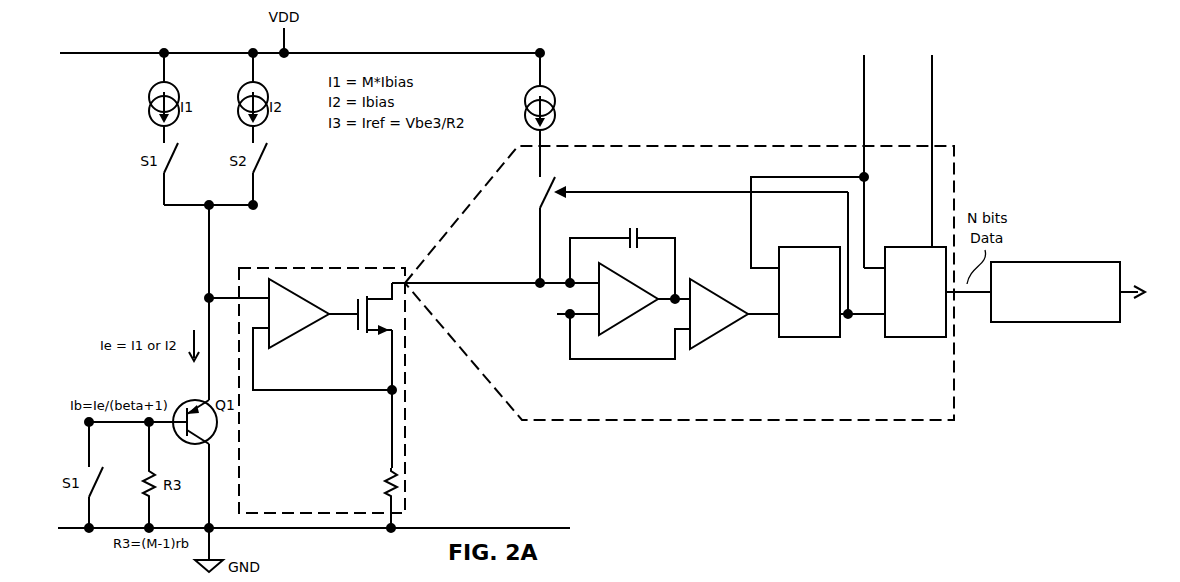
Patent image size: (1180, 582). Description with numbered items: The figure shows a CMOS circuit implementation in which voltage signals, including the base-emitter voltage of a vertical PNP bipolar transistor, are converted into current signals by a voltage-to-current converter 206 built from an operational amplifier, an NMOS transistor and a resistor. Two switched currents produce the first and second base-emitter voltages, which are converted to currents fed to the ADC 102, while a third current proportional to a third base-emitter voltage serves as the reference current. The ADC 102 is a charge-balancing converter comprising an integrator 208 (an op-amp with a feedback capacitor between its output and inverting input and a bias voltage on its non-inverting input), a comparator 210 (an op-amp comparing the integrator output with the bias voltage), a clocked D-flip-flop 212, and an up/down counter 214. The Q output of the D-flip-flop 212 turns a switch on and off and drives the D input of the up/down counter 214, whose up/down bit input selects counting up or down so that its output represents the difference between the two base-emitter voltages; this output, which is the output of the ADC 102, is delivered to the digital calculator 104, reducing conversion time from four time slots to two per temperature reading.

The ADC 102 is at (690, 141).
The digital calculator 104 is at (1064, 262).
The voltage-to-current (V2C) converter 206 is at (329, 268).
The integrator 208 is at (601, 305).
The comparator 210 is at (738, 348).
The D-flip-flop 212 is at (818, 276).
The up/down counter 214 is at (907, 321).